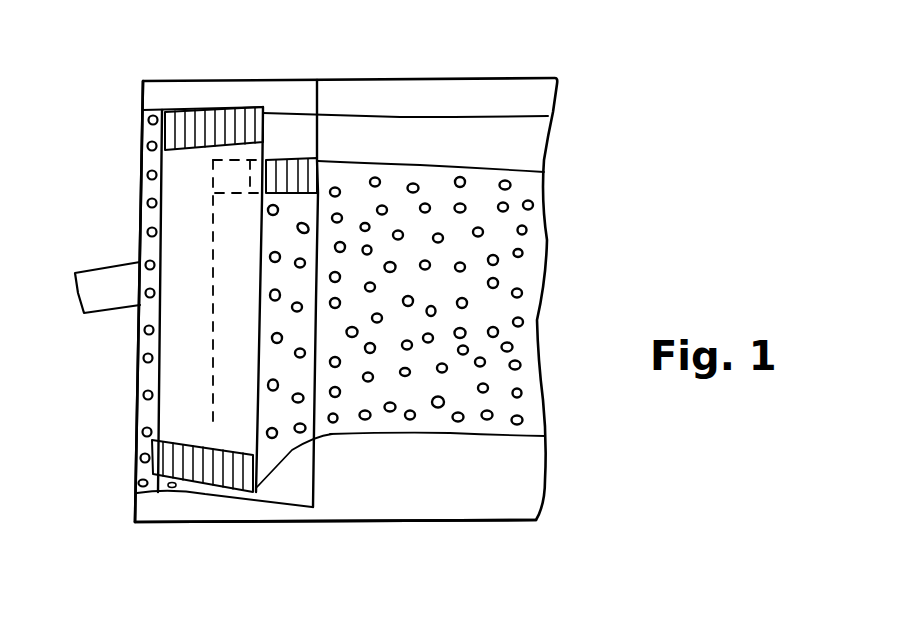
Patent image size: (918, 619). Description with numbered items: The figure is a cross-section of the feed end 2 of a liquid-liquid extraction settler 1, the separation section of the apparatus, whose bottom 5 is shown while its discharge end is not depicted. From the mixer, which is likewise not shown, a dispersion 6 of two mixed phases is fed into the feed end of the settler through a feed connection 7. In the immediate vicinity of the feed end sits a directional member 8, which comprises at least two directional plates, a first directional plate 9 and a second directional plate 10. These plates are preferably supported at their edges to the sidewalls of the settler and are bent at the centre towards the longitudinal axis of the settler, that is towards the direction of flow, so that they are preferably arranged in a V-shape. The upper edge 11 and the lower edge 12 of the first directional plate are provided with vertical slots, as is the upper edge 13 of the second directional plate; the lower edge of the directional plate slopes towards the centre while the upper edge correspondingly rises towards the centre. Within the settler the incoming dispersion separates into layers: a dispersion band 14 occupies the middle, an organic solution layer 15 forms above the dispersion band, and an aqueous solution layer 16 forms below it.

The settler 1 is at (541, 50).
The feed end 2 is at (138, 192).
The bottom 5 is at (389, 523).
The dispersion 6 is at (150, 230).
The feed connection 7 is at (105, 292).
The directional member 8 is at (225, 505).
The first directional plate 9 is at (178, 169).
The second directional plate 10 is at (282, 480).
The upper edge of the first directional plate 11 is at (230, 113).
The lower edge of the first directional plate 12 is at (182, 460).
The upper edge of the second directional plate 13 is at (317, 112).
The dispersion band 14 is at (478, 233).
The organic solution layer 15 is at (525, 142).
The aqueous solution layer 16 is at (528, 472).